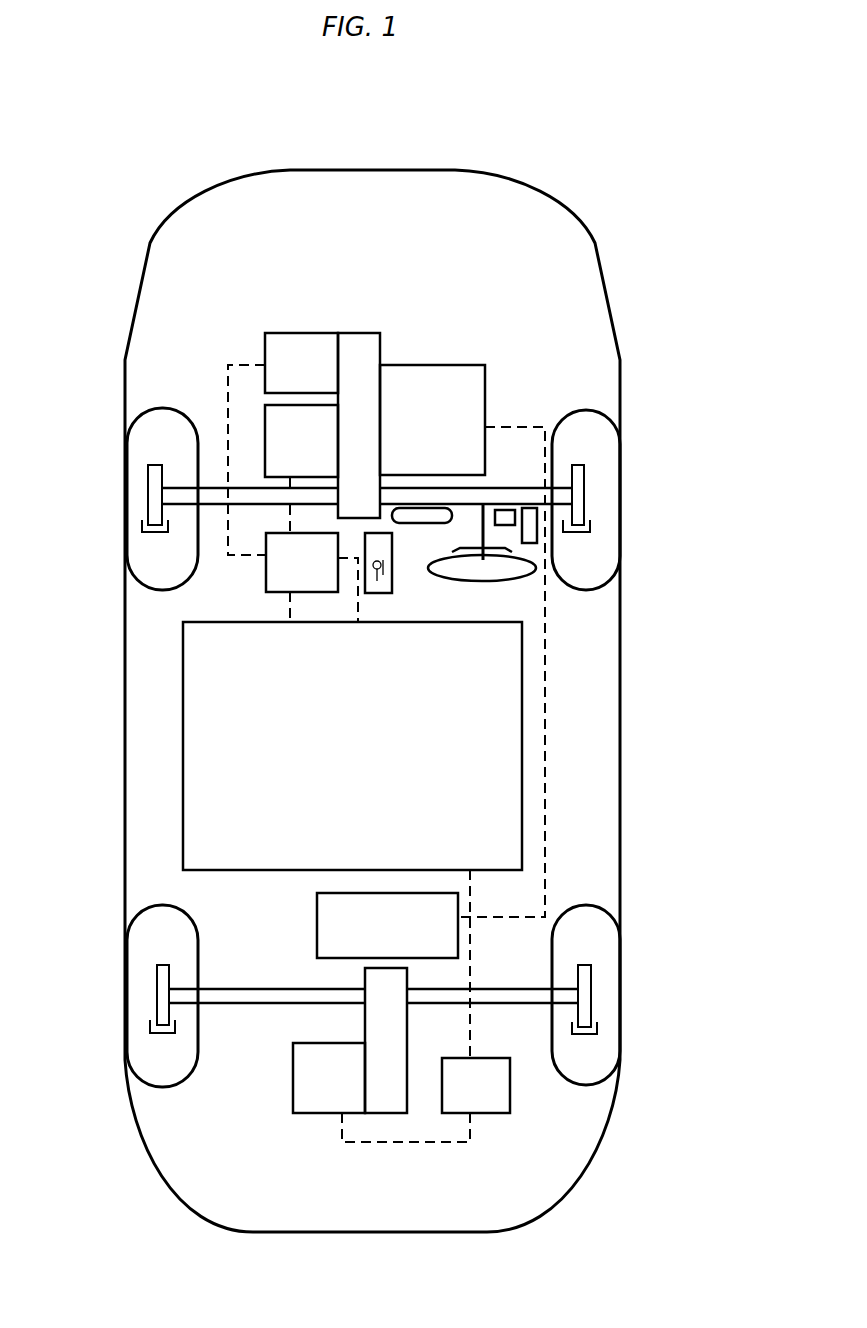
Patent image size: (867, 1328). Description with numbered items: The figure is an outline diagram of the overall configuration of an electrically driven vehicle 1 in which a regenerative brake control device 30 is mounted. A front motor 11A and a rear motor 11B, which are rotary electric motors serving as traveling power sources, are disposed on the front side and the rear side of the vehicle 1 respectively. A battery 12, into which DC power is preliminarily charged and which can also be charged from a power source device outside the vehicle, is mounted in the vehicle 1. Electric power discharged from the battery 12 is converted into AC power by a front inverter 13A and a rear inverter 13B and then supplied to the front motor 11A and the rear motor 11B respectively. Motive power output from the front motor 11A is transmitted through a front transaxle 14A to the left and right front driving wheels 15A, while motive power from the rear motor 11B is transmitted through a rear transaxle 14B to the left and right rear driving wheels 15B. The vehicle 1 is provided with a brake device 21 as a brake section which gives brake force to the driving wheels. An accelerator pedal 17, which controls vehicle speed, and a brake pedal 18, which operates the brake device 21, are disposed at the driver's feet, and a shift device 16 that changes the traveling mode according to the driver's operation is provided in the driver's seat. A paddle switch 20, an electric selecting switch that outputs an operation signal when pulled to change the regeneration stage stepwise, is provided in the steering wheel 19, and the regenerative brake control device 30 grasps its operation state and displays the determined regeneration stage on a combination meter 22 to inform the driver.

The electrically driven vehicle 1 is at (585, 234).
The front motor 11A is at (319, 417).
The rear motor 11B is at (322, 1043).
The battery 12 is at (337, 754).
The front inverter 13A is at (266, 583).
The rear inverter 13B is at (510, 1092).
The front transaxle 14A is at (358, 345).
The rear transaxle 14B is at (388, 1097).
The front driving wheels 15A is at (127, 504).
The rear driving wheels 15B is at (135, 1000).
The shift device 16 is at (388, 594).
The accelerator pedal 17 is at (537, 540).
The brake pedal 18 is at (507, 510).
The steering wheel 19 is at (482, 582).
The paddle switch 20 is at (452, 548).
The brake device 21 is at (143, 478).
The combination meter 22 is at (413, 508).
The regenerative brake control device 30 is at (178, 608).